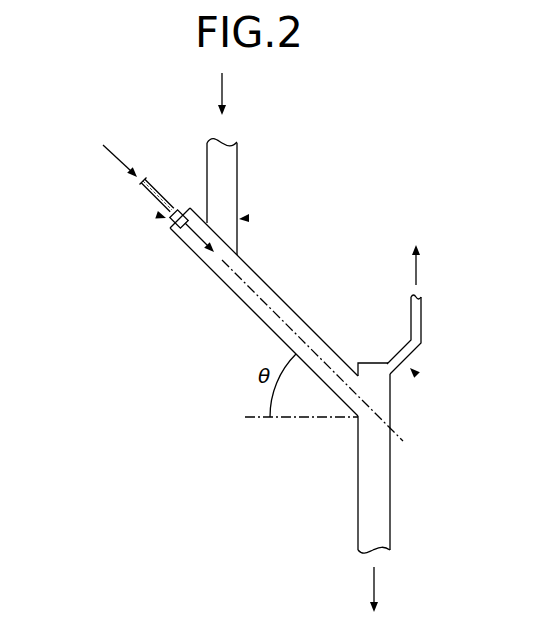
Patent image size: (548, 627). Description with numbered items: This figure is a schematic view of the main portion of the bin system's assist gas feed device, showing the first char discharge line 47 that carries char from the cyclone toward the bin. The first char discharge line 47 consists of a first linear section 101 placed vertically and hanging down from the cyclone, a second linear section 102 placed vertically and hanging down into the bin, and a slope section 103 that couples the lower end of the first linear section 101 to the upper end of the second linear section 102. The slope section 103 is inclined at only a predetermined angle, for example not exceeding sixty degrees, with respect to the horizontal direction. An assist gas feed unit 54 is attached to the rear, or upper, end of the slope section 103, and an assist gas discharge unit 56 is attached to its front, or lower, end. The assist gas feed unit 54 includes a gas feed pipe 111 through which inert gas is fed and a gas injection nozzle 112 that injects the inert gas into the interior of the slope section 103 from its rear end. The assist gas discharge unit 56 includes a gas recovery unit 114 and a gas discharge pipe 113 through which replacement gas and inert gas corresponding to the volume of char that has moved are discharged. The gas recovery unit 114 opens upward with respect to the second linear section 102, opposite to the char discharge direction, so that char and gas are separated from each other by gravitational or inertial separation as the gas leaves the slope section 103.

The first linear section 101 is at (230, 160).
The second linear section 102 is at (382, 520).
The slope section 103 is at (282, 310).
The gas feed pipe 111 is at (147, 183).
The gas injection nozzle 112 is at (170, 225).
The gas discharge pipe 113 is at (416, 320).
The gas recovery unit 114 is at (372, 372).
The first char discharge line 47 is at (247, 216).
The assist gas feed unit 54 is at (160, 216).
The assist gas discharge unit 56 is at (416, 374).